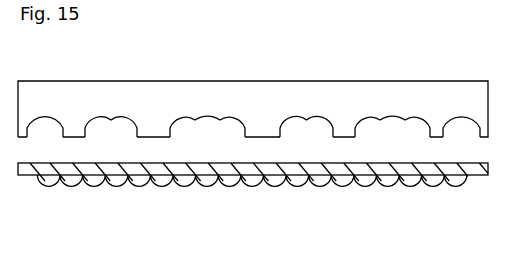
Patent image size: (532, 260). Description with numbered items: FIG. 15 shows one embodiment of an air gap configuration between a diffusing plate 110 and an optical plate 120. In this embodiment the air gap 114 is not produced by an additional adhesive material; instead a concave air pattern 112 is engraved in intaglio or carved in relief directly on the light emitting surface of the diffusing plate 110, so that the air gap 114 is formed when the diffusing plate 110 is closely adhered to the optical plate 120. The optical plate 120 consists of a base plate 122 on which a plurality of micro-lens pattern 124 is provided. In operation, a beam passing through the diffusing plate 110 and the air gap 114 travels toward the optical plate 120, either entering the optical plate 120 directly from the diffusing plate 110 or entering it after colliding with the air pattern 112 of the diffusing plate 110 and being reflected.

The diffusing plate 110 is at (253, 85).
The air pattern 112 is at (372, 117).
The air gap 114 is at (458, 120).
The optical plate 120 is at (261, 204).
The base plate 122 is at (488, 169).
The micro-lens pattern 124 is at (458, 178).